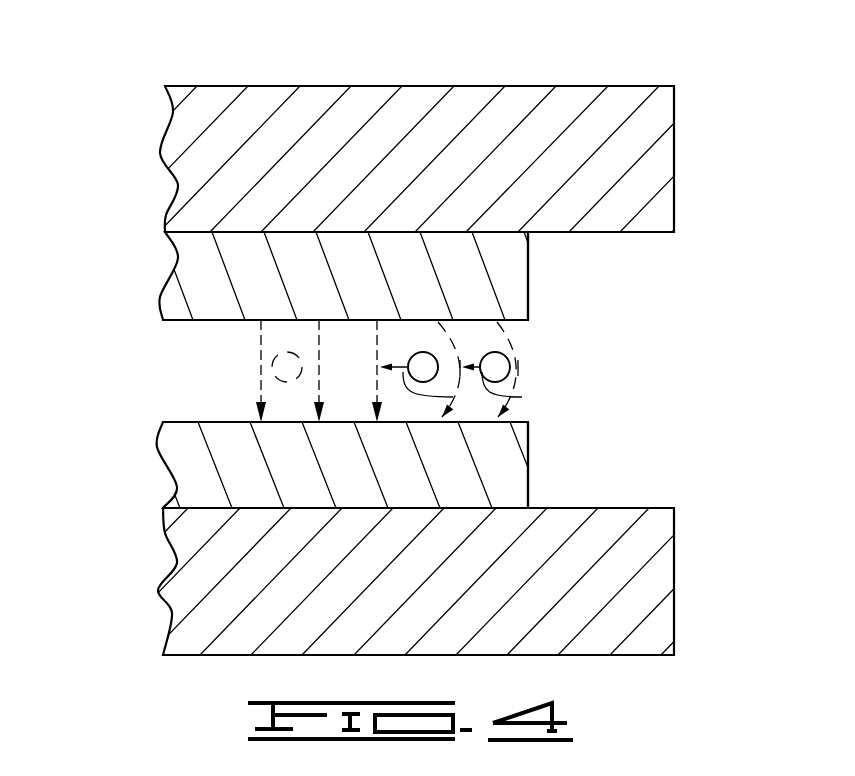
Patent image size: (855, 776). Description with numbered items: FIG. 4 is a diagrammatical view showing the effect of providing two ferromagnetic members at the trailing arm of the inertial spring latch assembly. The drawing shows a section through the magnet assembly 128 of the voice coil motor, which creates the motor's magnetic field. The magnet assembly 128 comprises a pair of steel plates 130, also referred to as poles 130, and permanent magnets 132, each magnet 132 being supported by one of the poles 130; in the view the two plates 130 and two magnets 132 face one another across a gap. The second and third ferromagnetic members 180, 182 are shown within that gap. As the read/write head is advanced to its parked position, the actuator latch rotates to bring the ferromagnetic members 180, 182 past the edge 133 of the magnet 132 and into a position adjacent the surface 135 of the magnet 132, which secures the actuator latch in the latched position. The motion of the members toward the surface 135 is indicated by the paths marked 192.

The magnet assembly 128 is at (148, 58).
The steel plates 130 is at (658, 165).
The permanent magnets 132 is at (183, 288).
The edge 133 is at (530, 275).
The surface 135 is at (187, 322).
The second ferromagnetic member 180 is at (513, 370).
The third ferromagnetic member 182 is at (437, 357).
The particle trajectory 192 is at (535, 397).